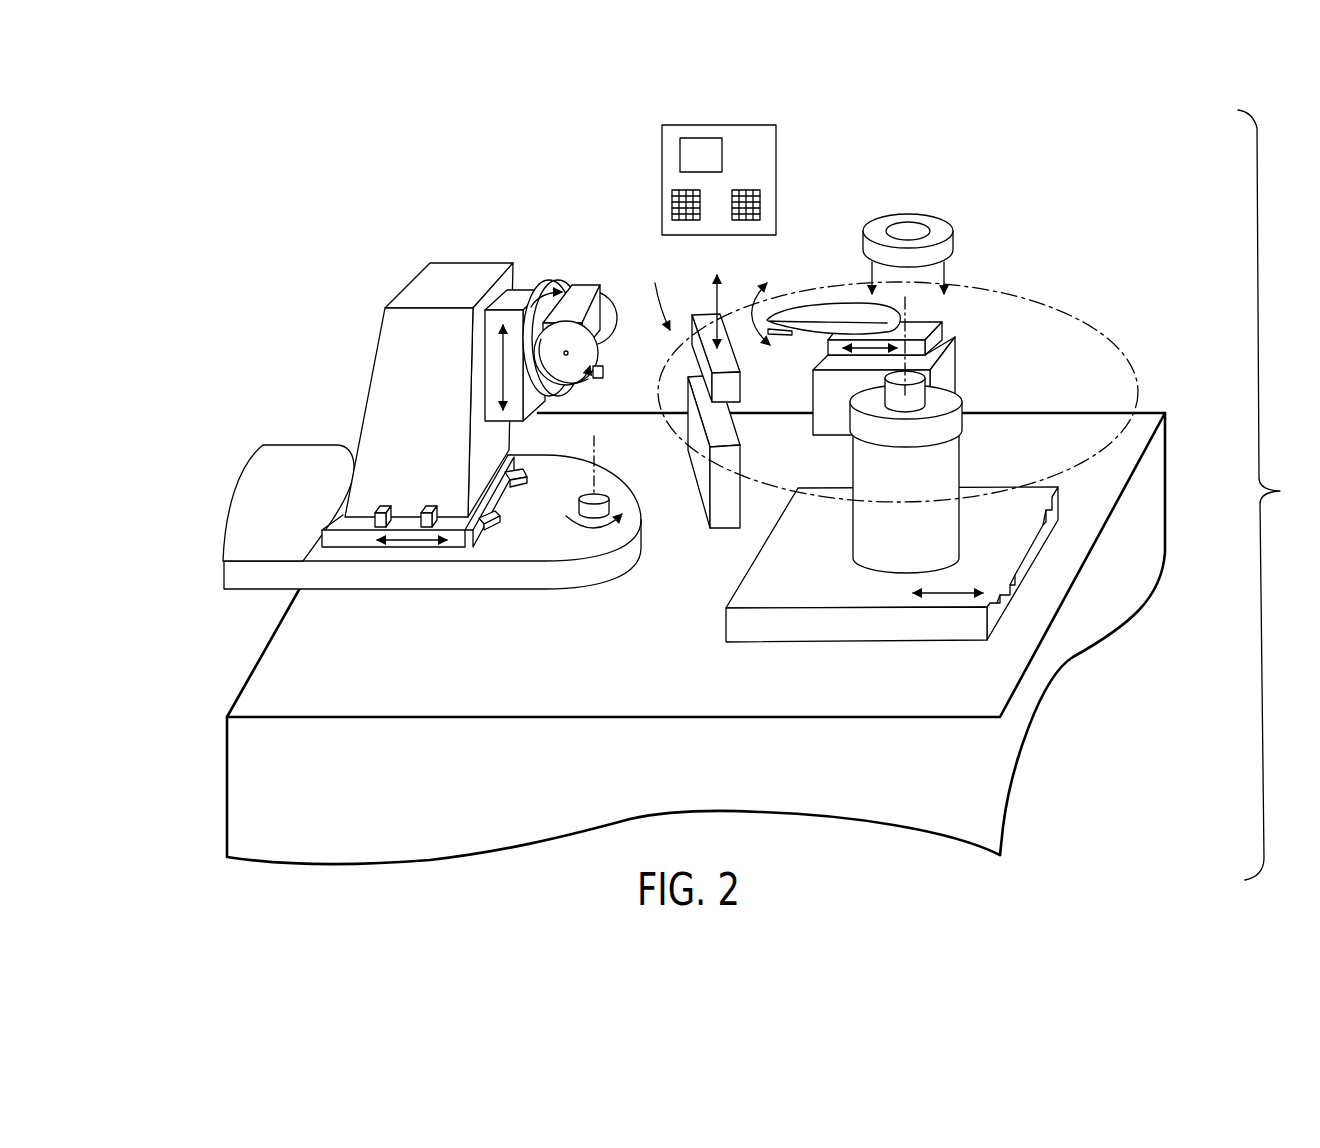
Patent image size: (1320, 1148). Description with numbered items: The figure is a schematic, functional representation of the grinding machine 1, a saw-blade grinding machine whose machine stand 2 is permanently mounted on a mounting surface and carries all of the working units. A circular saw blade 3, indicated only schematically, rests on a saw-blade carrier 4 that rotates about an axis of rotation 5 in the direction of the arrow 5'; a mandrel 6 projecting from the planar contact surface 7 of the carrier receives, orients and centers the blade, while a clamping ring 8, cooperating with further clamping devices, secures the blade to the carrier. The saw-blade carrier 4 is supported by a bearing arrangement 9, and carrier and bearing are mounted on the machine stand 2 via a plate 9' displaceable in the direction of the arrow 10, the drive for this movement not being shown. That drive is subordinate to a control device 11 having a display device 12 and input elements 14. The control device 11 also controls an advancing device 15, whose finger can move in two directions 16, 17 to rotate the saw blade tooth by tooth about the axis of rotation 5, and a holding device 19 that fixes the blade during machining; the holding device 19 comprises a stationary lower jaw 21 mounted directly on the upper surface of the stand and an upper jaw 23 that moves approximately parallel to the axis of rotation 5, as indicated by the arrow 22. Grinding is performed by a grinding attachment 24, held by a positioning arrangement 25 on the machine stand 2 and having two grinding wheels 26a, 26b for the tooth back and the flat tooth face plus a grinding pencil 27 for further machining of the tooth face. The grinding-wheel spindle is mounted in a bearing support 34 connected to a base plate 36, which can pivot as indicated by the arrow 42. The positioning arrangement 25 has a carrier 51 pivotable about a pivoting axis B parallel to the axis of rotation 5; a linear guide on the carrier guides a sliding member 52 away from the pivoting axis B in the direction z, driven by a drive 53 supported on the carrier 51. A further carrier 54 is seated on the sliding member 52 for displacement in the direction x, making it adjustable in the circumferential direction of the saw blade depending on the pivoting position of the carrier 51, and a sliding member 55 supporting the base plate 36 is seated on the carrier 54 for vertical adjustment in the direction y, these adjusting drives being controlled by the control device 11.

The grinding machine 1 is at (1045, 257).
The machine stand 2 is at (1160, 482).
The circular saw blade 3 is at (1120, 352).
The saw-blade carrier 4 is at (950, 398).
The axis of rotation 5 is at (927, 345).
The arrow 5' is at (754, 328).
The mandrel 6 is at (922, 390).
The planar contact surface 7 is at (862, 398).
The clamping ring 8 is at (940, 230).
The bearing arrangement 9 is at (933, 501).
The plate 9' is at (892, 564).
The arrow 10 is at (946, 600).
The control device 11 is at (778, 172).
The display device 12 is at (692, 140).
The input elements 14 is at (720, 190).
The advancing device 15 is at (800, 298).
The direction 16 is at (944, 336).
The direction 17 is at (877, 345).
The holding device 19 is at (651, 292).
The stationary lower jaw 21 is at (704, 488).
The arrow 22 is at (724, 303).
The upper jaw 23 is at (702, 318).
The grinding attachment 24 is at (557, 262).
The positioning arrangement 25 is at (336, 380).
The grinding wheel 26a is at (574, 383).
The grinding wheel 26b is at (607, 310).
The grinding pencil 27 is at (604, 371).
The bearing support 34 is at (577, 292).
The base plate 36 is at (547, 294).
The arrow 42 is at (544, 278).
The carrier 51 is at (468, 580).
The sliding member 52 is at (494, 493).
The Z drive 53 is at (248, 528).
The carrier 54 is at (402, 441).
The sliding member 55 is at (492, 405).
The pivoting axis B is at (599, 442).
The X direction x is at (492, 466).
The Y direction y is at (500, 368).
The Z direction z is at (400, 543).